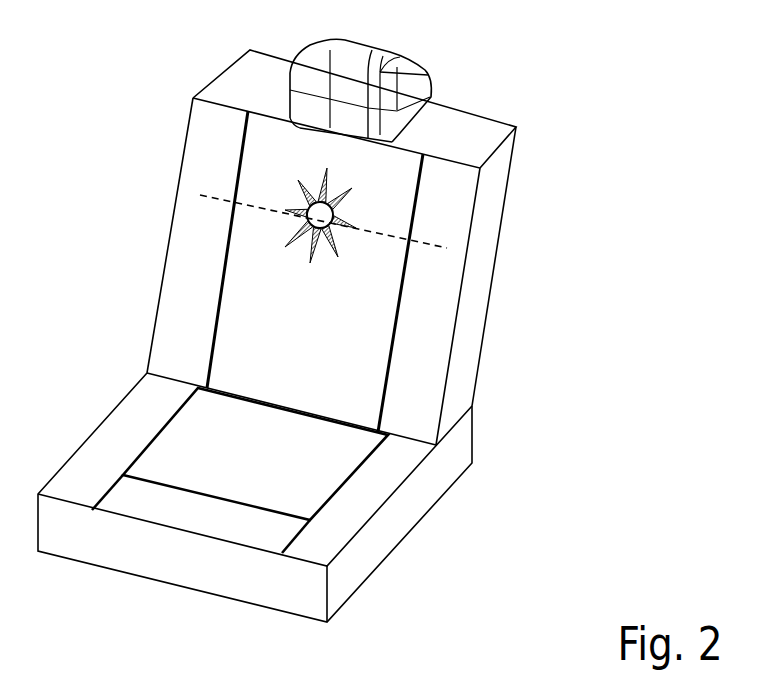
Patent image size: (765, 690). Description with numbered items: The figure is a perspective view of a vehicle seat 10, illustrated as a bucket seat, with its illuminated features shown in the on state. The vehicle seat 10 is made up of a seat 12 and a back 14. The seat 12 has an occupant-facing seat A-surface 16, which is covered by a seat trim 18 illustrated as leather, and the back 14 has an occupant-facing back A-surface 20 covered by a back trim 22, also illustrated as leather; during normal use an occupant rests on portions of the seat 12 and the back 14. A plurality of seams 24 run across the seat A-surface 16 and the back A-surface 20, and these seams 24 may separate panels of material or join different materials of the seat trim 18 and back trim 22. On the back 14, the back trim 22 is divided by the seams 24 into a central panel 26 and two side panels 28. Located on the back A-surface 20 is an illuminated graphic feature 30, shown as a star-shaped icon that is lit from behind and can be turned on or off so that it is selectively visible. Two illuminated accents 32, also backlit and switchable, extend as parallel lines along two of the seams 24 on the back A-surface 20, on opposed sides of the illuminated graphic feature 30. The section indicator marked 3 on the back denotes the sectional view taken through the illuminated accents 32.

The vehicle seat 10 is at (587, 123).
The seat 12 is at (388, 557).
The back 14 is at (488, 318).
The seat A-surface 16 is at (235, 468).
The seat trim 18 is at (108, 433).
The back A-surface 20 is at (283, 381).
The back trim 22 is at (182, 200).
The seams 24 is at (382, 460).
The central panel 26 is at (267, 320).
The side panels 28 is at (169, 310).
The illuminated graphic feature 30 is at (327, 203).
The illuminated accents 32 is at (233, 245).
The section line FIG. 3 is at (207, 217).